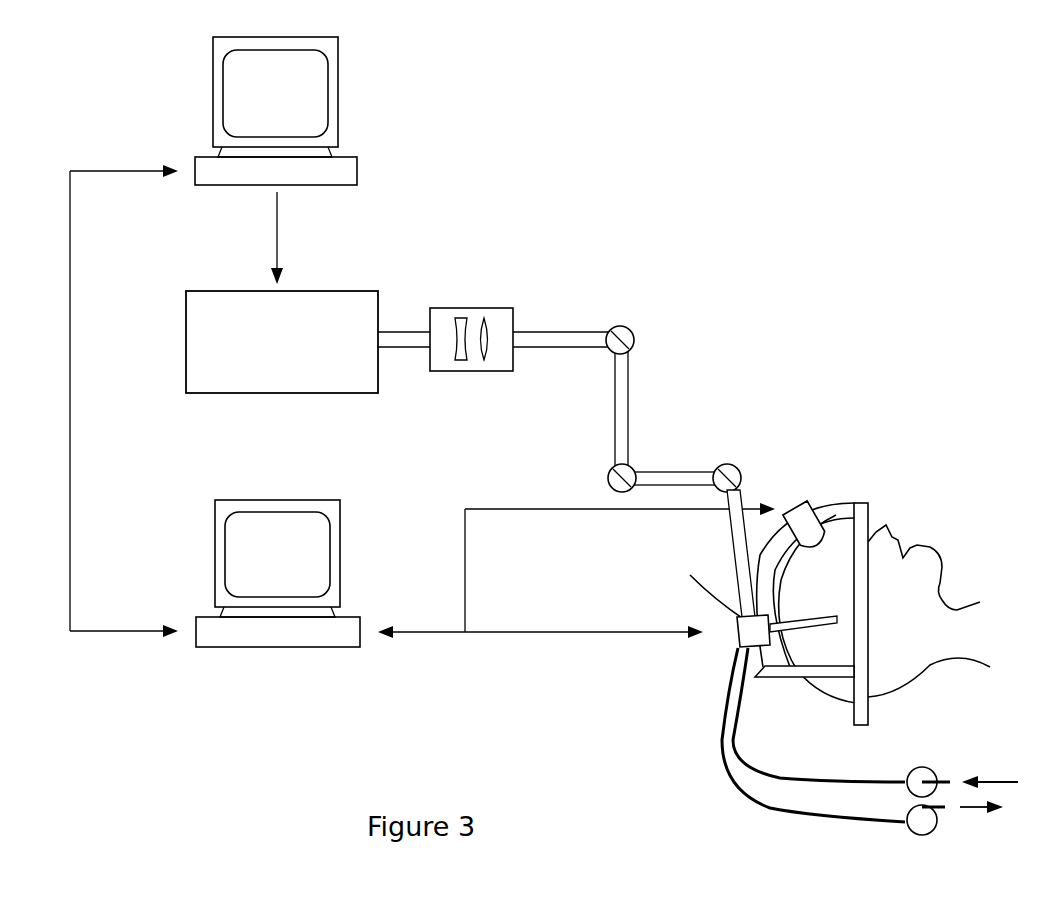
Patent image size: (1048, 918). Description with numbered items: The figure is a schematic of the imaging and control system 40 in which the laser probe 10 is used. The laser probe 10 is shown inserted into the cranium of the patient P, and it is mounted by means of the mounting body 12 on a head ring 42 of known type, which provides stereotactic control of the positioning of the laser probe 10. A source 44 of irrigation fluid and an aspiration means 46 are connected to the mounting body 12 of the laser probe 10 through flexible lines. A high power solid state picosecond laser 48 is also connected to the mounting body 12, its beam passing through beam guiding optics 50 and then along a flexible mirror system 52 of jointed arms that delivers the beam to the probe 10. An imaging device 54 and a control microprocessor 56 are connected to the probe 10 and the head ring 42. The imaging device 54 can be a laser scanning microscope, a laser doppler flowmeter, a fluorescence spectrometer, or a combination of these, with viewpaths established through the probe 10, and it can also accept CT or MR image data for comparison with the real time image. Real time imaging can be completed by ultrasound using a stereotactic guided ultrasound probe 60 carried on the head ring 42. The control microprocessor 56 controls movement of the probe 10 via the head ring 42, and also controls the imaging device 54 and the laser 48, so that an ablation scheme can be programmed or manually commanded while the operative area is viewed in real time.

The laser probe 10 is at (733, 615).
The mounting body 12 is at (781, 735).
The imaging and control system 40 is at (712, 240).
The head ring 42 is at (840, 515).
The source of irrigation fluid 44 is at (916, 765).
The aspiration means 46 is at (925, 835).
The high power solid state picosecond laser 48 is at (200, 308).
The beam guiding optics 50 is at (497, 318).
The flexible mirror system 52 is at (627, 397).
The imaging device 54 is at (208, 637).
The control microprocessor 56 is at (200, 165).
The stereotactic guided ultrasound probe 60 is at (800, 498).
The patient P is at (920, 590).